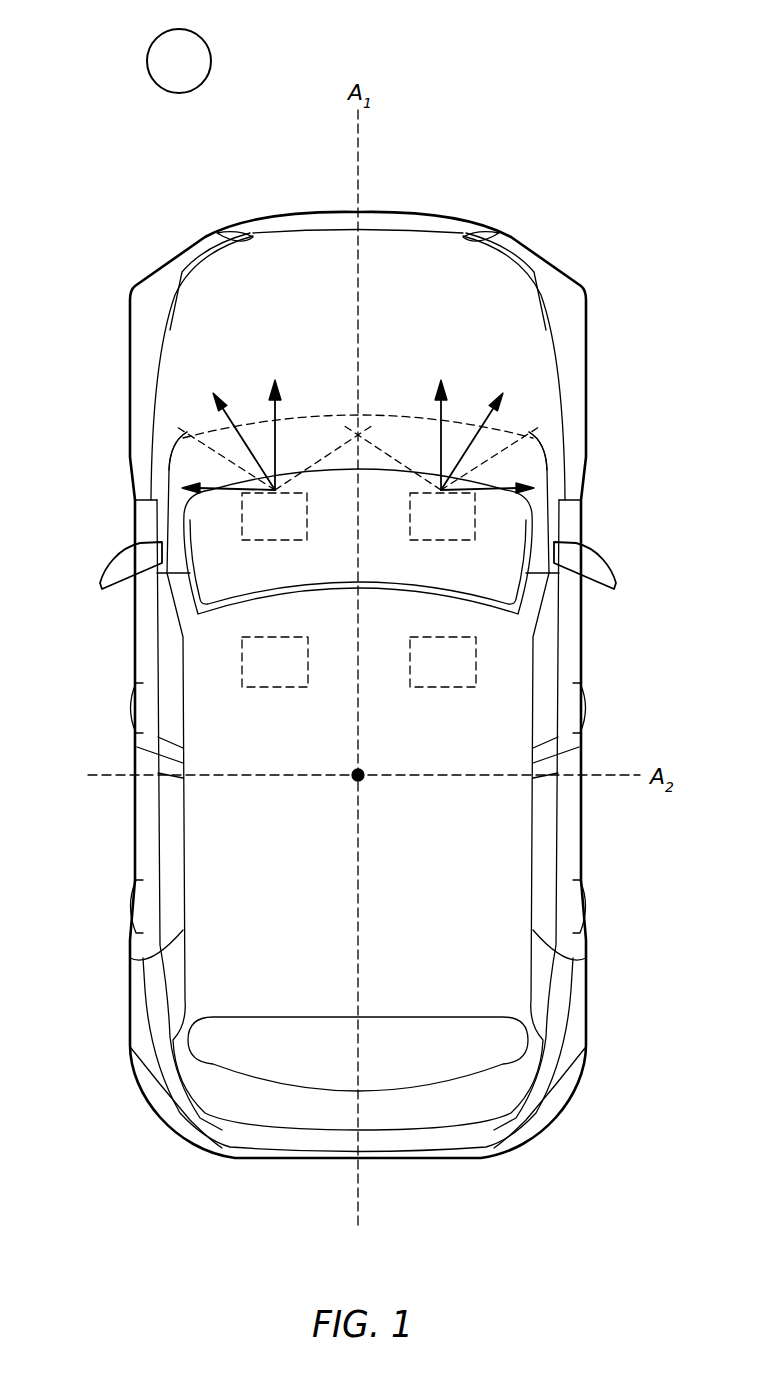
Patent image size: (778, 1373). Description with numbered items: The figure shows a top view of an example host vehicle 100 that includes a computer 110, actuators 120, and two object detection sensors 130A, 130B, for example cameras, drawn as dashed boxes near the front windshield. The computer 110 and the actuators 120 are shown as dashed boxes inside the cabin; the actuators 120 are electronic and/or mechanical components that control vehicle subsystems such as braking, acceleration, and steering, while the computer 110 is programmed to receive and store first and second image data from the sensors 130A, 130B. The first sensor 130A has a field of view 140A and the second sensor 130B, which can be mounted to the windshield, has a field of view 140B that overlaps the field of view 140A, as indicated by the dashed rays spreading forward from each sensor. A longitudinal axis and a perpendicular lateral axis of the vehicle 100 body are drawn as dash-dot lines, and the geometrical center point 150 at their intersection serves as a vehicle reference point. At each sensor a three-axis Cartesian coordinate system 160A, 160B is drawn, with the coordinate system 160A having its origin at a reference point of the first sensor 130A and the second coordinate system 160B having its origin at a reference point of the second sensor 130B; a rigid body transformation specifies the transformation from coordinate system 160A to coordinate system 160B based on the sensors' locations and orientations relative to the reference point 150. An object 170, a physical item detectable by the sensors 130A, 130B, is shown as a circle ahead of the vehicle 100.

The host vehicle 100 is at (437, 919).
The computer 110 is at (275, 662).
The actuators 120 is at (443, 662).
The first sensor 130A is at (274, 516).
The second sensor 130B is at (442, 516).
The field of view 140A is at (187, 432).
The field of view 140B is at (529, 432).
The geometrical center point 150 is at (362, 781).
The coordinate system 160A is at (233, 413).
The second coordinate system 160B is at (483, 413).
The object 170 is at (153, 42).